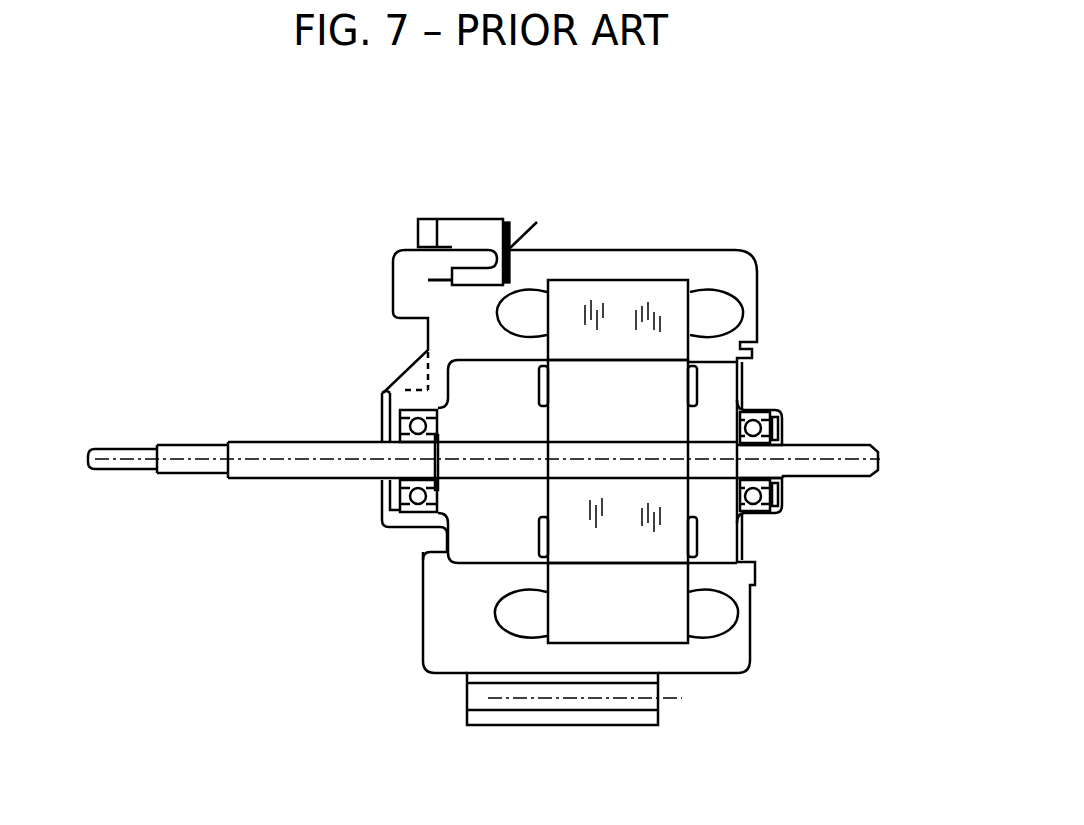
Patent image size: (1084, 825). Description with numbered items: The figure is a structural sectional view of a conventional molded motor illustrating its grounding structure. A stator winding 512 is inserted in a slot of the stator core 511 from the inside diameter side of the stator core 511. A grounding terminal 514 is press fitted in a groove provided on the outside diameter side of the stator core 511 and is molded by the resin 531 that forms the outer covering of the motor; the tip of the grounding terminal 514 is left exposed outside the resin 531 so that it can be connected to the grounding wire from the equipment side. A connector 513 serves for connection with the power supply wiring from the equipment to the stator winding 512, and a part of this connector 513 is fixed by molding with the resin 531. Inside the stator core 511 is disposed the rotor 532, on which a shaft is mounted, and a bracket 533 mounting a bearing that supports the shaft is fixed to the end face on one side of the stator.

The stator core 511 is at (600, 318).
The stator winding 512 is at (724, 315).
The connector 513 is at (420, 218).
The grounding terminal 514 is at (523, 218).
The resin 531 is at (676, 250).
The rotor 532 is at (647, 405).
The bracket 533 is at (781, 425).